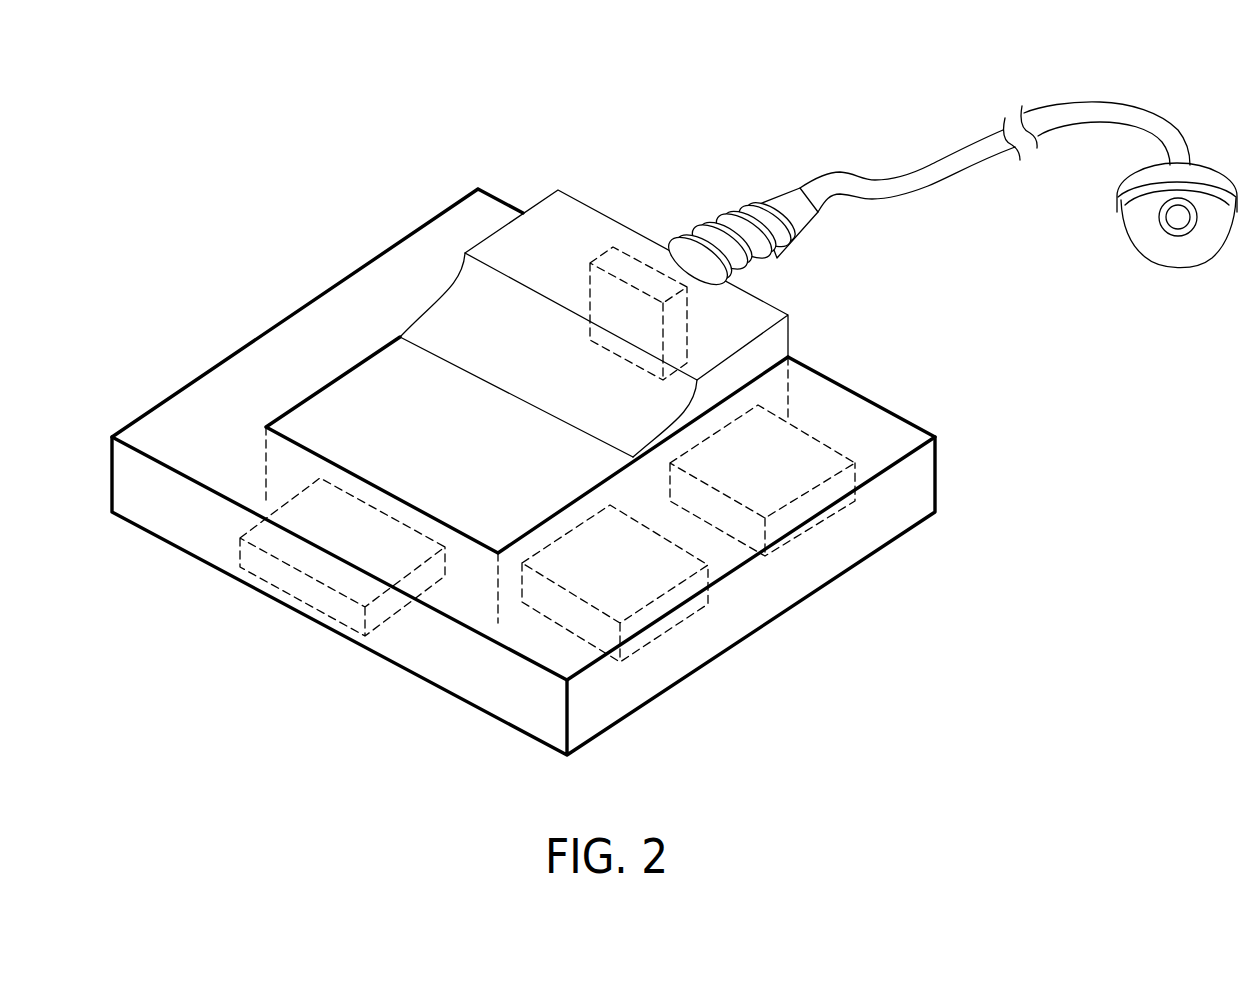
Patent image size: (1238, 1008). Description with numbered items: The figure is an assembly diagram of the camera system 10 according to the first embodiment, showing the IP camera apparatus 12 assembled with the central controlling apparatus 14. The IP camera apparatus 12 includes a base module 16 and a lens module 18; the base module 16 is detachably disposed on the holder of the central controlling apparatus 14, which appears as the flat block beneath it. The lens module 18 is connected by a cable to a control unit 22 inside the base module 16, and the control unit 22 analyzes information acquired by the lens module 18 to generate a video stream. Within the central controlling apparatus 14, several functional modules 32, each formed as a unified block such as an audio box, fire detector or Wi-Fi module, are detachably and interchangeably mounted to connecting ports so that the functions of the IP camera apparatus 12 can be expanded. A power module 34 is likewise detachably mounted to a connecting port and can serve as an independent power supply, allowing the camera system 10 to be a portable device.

The camera system 10 is at (190, 97).
The IP camera apparatus 12 is at (1072, 453).
The central controlling apparatus 14 is at (176, 426).
The base module 16 is at (789, 352).
The lens module 18 is at (1178, 274).
The control unit 22 is at (623, 258).
The functional modules 32 is at (818, 519).
The power module 34 is at (310, 563).